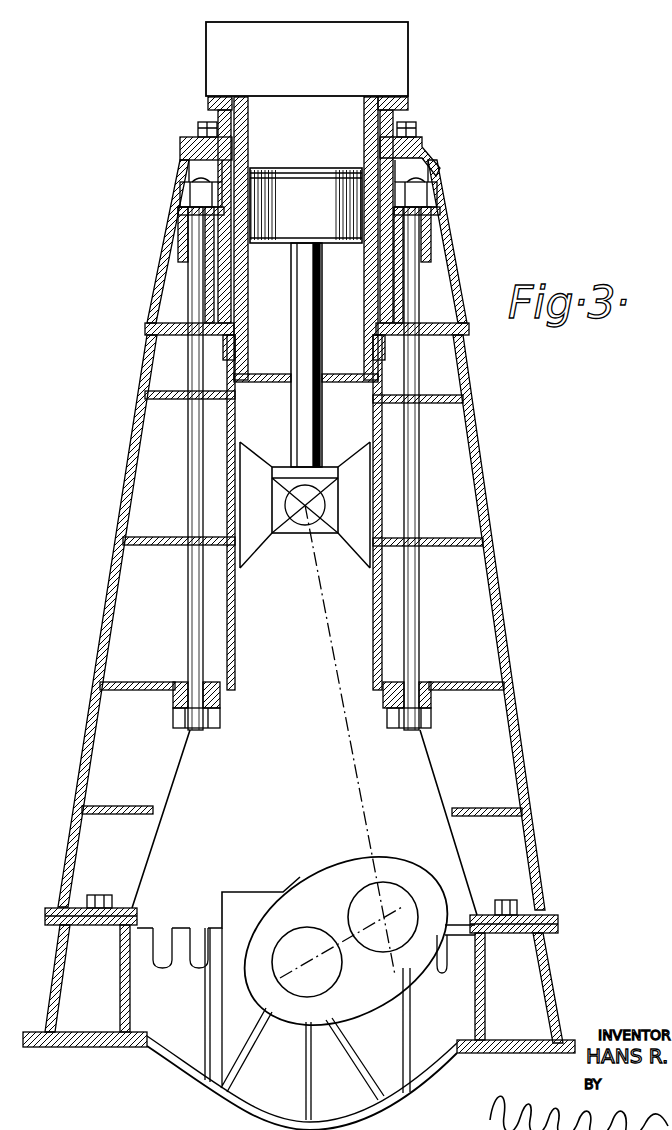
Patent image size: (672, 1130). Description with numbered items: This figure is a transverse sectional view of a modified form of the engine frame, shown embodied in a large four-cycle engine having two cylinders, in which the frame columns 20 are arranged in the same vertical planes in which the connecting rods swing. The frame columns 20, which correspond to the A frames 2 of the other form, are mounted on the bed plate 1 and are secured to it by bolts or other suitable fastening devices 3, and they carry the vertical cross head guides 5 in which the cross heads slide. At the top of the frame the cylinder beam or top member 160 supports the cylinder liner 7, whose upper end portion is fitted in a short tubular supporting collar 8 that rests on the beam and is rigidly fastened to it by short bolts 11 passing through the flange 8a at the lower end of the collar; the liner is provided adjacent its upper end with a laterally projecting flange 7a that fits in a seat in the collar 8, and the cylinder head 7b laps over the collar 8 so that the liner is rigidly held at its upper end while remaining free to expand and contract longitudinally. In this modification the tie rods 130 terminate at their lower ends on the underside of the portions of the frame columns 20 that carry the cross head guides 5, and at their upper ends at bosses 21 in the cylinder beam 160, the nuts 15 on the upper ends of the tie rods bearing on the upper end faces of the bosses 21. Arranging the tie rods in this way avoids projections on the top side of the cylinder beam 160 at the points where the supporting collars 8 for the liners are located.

The bed plate 1 is at (553, 948).
The A frame 2 is at (153, 773).
The bolts 3 is at (100, 897).
The cross head guides 5 is at (233, 660).
The cylinder liner 7 is at (246, 143).
The liner flange 7a is at (248, 97).
The cylinder head 7b is at (360, 62).
The collar 8 is at (210, 100).
The flange 8a is at (197, 137).
The short bolts 11 is at (411, 126).
The nuts 15 is at (182, 200).
The frame columns 20 is at (498, 583).
The bosses 21 is at (182, 258).
The tie rods 130 is at (200, 425).
The cylinder beam 160 is at (421, 148).